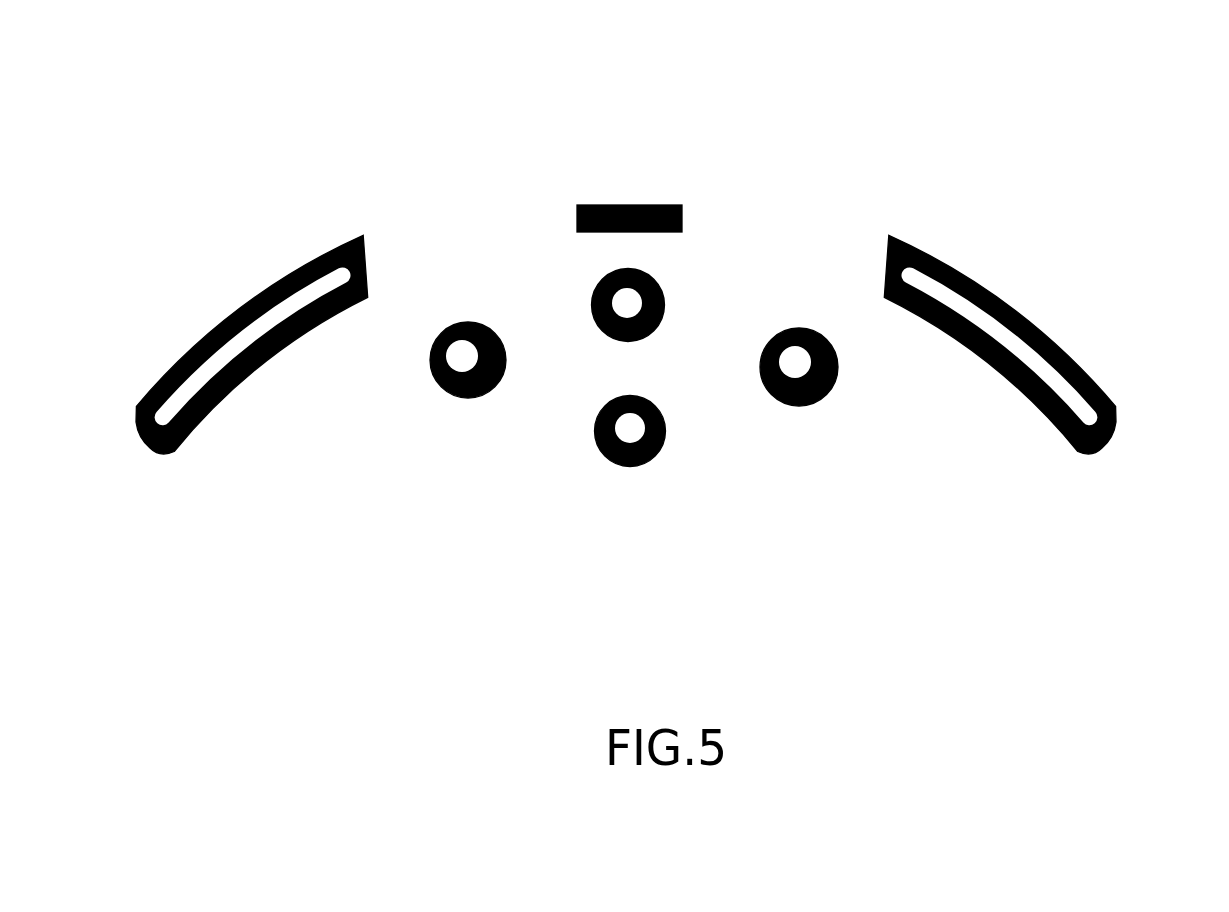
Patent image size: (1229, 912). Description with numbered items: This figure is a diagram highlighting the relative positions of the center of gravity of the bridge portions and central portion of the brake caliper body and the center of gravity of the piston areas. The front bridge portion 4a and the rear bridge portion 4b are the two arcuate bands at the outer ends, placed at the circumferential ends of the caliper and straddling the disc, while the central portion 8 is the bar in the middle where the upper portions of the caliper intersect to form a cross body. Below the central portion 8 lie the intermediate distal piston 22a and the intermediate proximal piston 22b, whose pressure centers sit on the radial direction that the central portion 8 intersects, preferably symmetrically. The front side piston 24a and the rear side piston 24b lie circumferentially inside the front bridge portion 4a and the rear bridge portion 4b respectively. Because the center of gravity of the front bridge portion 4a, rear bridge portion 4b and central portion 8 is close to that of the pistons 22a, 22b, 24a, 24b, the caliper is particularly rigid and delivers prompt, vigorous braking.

The front bridge portion 4a is at (255, 292).
The rear bridge portion 4b is at (1058, 343).
The central portion 8 is at (642, 203).
The intermediate distal piston 22a is at (667, 297).
The intermediate proximal piston 22b is at (630, 468).
The front side piston 24a is at (477, 322).
The rear side piston 24b is at (790, 328).